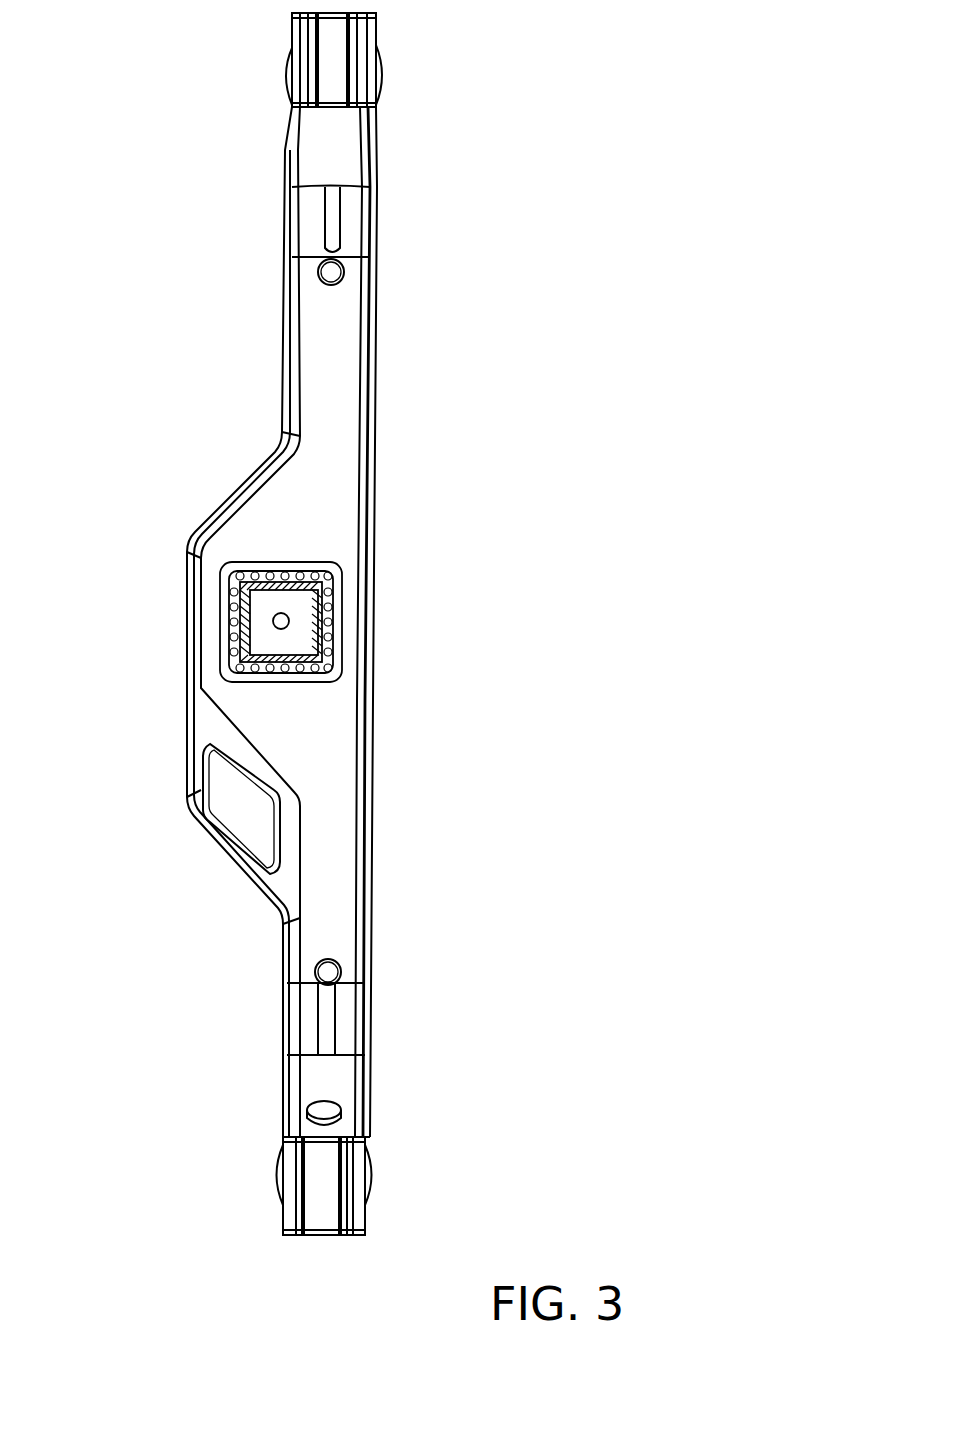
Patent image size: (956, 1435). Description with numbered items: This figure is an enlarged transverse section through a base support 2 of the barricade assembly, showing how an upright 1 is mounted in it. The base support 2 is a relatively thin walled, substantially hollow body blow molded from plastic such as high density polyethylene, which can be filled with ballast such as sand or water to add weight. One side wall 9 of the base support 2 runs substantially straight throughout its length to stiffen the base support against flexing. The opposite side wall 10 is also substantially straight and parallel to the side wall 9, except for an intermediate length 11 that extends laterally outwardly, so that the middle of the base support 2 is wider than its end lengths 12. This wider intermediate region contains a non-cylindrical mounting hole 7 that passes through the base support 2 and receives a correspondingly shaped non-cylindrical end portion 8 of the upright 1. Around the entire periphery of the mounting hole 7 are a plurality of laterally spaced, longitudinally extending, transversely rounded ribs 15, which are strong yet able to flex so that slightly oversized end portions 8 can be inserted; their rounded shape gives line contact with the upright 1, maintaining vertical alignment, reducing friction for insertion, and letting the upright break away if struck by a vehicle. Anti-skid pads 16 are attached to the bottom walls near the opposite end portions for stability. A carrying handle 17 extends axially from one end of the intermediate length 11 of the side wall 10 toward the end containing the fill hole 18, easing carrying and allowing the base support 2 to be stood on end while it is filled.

The base support 2 is at (235, 389).
The anti-skid pads 16 is at (386, 74).
The end lengths 12 is at (307, 234).
The non-cylindrical mounting hole 7 is at (342, 620).
The non-cylindrical end portion 8 is at (224, 605).
The upright 1 is at (232, 637).
The ribs 15 is at (256, 678).
The intermediate length 11 is at (187, 665).
The side wall 9 is at (373, 790).
The opposite side wall 10 is at (283, 960).
The carrying handle 17 is at (213, 840).
The fill hole 18 is at (342, 1110).